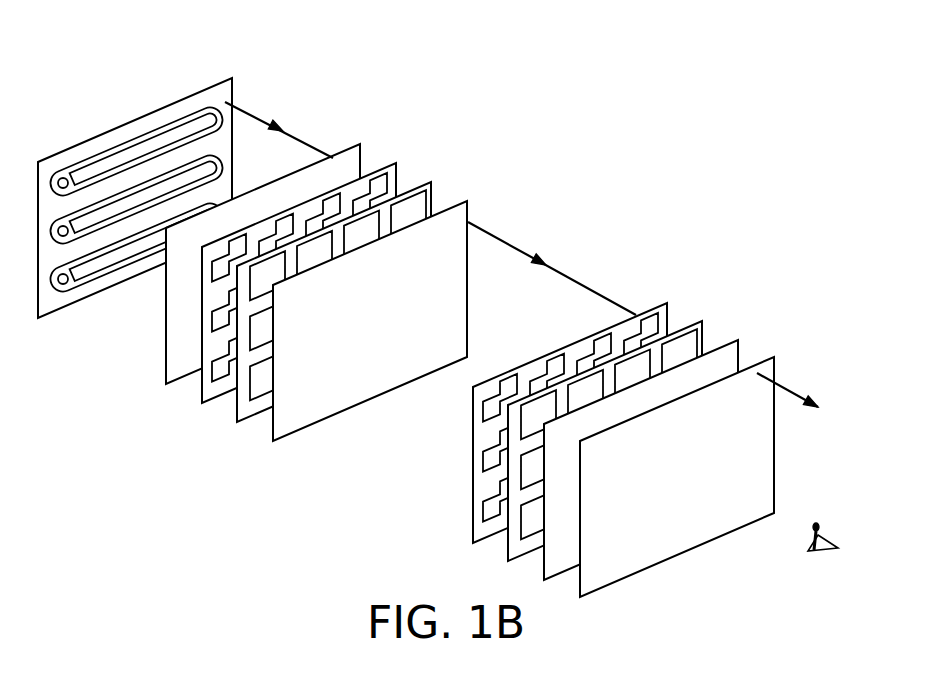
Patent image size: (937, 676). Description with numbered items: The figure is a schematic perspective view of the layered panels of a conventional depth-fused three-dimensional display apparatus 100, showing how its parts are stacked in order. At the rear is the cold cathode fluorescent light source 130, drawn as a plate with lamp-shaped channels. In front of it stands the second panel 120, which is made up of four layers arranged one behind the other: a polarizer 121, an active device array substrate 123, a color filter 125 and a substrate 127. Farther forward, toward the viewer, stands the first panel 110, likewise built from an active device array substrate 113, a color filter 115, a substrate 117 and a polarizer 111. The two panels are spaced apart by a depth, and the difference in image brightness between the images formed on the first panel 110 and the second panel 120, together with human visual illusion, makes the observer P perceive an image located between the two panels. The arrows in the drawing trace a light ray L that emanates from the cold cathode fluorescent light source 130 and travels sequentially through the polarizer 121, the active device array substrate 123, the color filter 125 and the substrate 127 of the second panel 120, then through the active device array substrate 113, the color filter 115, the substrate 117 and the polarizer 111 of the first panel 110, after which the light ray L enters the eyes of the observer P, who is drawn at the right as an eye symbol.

The 3D display apparatus 100 is at (463, 317).
The first panel 110 is at (665, 395).
The polarizer 111 is at (675, 237).
The active device array substrate 113 is at (668, 313).
The color filter 115 is at (704, 332).
The substrate 117 is at (740, 352).
The second panel 120 is at (359, 239).
The polarizer 121 is at (362, 158).
The active device array substrate 123 is at (398, 177).
The color filter 125 is at (433, 197).
The substrate 127 is at (368, 80).
The cold cathode fluorescent light source 130 is at (208, 88).
The light ray L is at (302, 130).
The observer P is at (818, 555).